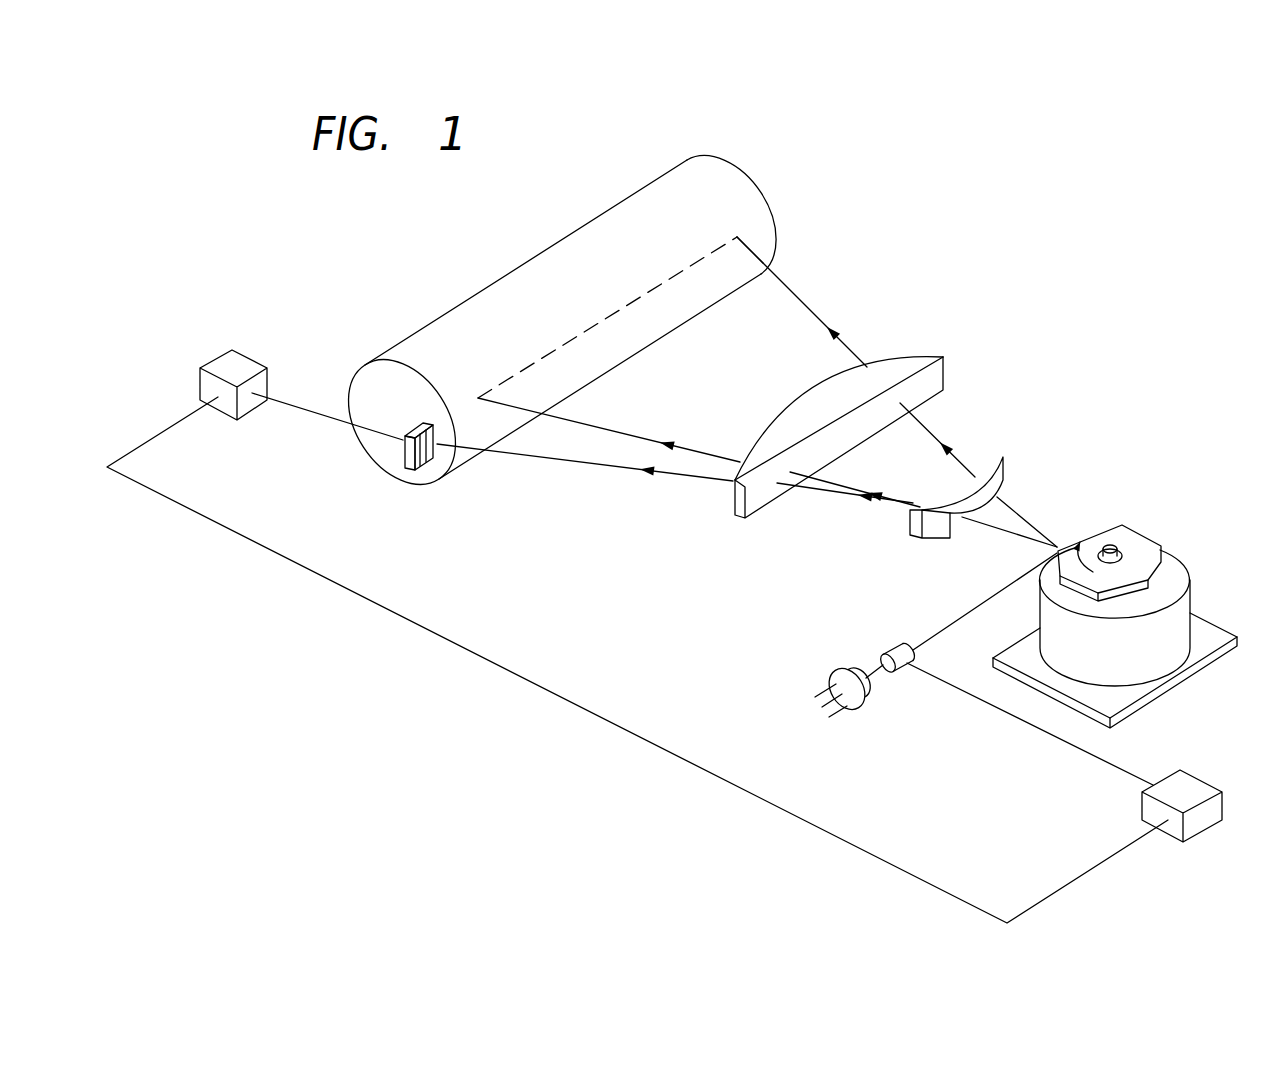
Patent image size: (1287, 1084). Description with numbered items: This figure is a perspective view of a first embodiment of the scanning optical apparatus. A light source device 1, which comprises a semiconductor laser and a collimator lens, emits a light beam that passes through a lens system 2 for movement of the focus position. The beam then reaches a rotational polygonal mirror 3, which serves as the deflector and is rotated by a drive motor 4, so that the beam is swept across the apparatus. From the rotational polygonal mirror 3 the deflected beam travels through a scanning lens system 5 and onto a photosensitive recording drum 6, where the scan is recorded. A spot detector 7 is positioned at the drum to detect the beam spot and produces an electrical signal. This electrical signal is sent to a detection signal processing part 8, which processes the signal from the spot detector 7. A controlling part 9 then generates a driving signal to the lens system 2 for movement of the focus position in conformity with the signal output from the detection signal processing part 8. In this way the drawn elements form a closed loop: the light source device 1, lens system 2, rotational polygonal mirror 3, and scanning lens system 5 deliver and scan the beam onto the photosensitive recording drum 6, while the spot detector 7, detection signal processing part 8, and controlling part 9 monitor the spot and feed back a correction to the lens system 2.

The light source device 1 is at (837, 670).
The lens system for movement of the focus position 2 is at (890, 650).
The rotational polygonal mirror 3 is at (1120, 537).
The drive motor 4 is at (1172, 610).
The scanning lens system 5 is at (953, 332).
The photosensitive recording drum 6 is at (625, 213).
The spot detector 7 is at (403, 453).
The detection signal processing part 8 is at (243, 367).
The controlling part 9 is at (1190, 790).